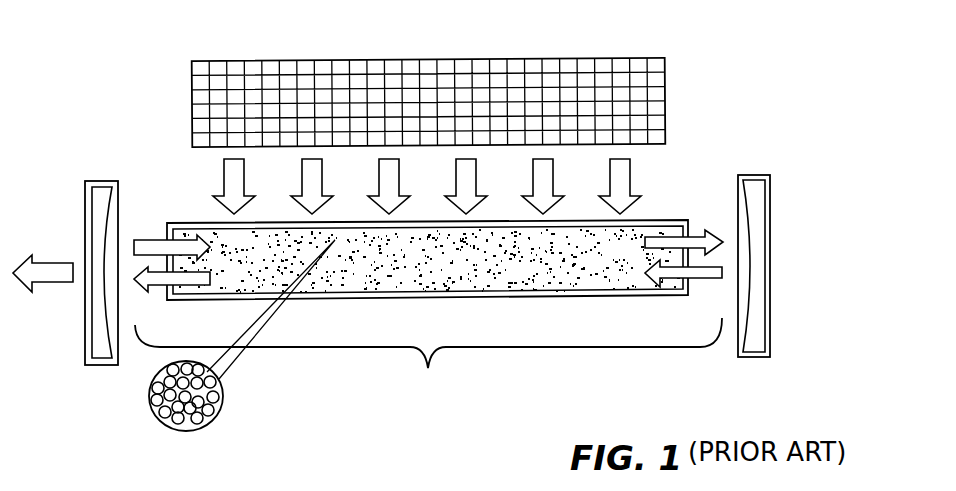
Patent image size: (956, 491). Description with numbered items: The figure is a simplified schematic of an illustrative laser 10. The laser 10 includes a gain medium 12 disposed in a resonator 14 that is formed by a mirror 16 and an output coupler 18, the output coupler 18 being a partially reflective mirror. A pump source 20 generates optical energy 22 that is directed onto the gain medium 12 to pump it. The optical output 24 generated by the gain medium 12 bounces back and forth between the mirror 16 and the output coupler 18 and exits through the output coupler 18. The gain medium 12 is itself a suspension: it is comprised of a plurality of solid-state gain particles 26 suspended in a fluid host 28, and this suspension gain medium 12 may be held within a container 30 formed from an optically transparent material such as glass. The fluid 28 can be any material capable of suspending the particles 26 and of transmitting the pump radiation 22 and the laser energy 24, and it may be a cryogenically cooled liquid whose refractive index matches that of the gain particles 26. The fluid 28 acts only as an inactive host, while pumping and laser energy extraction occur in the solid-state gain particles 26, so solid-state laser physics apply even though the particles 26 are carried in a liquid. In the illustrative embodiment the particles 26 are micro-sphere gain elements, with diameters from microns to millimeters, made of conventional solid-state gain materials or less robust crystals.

The laser 10 is at (690, 26).
The gain medium 12 is at (488, 290).
The resonator 14 is at (440, 396).
The mirror 16 is at (752, 175).
The output coupler 18 is at (101, 181).
The pump source 20 is at (192, 78).
The optical energy 22 is at (632, 164).
The optical output 24 is at (55, 263).
The solid-state gain particles 26 is at (222, 382).
The fluid host 28 is at (185, 428).
The container 30 is at (595, 293).